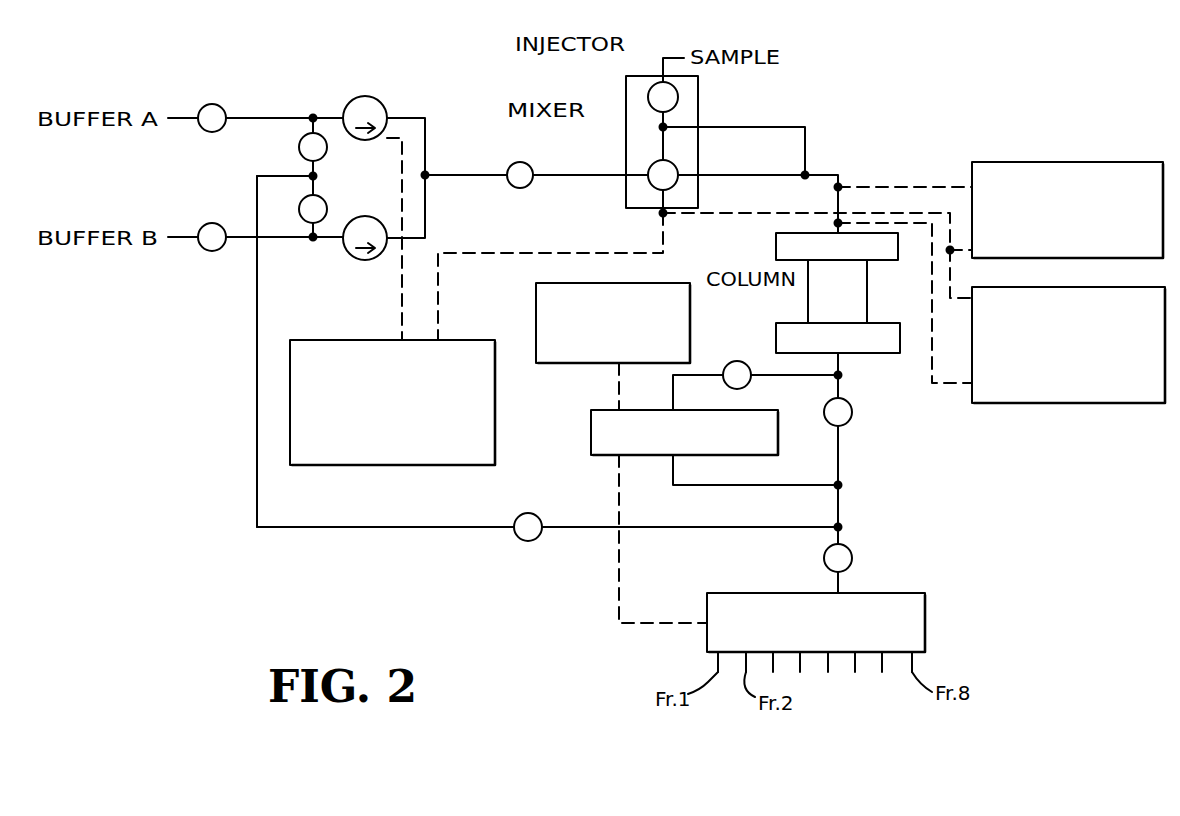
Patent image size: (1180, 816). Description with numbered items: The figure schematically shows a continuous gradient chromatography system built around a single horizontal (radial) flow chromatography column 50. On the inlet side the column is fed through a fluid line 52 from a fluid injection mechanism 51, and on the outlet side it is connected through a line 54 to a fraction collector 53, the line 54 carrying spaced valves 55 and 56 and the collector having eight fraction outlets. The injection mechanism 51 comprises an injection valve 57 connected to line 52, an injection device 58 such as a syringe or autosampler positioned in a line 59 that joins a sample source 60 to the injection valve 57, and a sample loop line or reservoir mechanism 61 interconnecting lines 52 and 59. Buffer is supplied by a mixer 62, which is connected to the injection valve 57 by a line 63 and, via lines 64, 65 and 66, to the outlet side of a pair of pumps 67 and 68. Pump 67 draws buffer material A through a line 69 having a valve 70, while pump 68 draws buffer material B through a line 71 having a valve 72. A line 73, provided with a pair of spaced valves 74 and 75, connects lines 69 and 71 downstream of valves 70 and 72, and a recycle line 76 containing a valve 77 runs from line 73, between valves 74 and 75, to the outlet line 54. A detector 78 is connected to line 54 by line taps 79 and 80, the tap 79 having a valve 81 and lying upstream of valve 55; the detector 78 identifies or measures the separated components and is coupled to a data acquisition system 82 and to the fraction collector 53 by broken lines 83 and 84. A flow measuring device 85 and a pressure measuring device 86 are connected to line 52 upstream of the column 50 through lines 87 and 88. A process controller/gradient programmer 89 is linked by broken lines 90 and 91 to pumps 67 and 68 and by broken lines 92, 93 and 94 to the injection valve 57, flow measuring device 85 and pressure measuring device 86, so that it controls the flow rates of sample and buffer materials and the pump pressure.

The horizontal chromatography column 50 is at (808, 290).
The fluid injection mechanism 51 is at (626, 100).
The fluid line 52 is at (838, 172).
The fraction collector 53 is at (927, 616).
The line 54 is at (840, 450).
The valve 55 is at (852, 416).
The valve 56 is at (852, 556).
The injection valve 57 is at (650, 184).
The injection device 58 is at (650, 90).
The line 59 is at (645, 130).
The sample source 60 is at (672, 57).
The sample loop line or reservoir mechanism 61 is at (745, 126).
The mixer 62 is at (545, 137).
The line 63 is at (556, 178).
The line 64 is at (485, 178).
The line 65 is at (428, 142).
The line 66 is at (428, 222).
The pump 67 is at (380, 100).
The pump 68 is at (352, 256).
The line 69 is at (266, 117).
The valve 70 is at (212, 104).
The line 71 is at (298, 240).
The valve 72 is at (222, 205).
The line 73 is at (318, 176).
The valve 74 is at (299, 147).
The valve 75 is at (327, 209).
The recycle line 76 is at (257, 414).
The valve 77 is at (520, 542).
The detector 78 is at (591, 448).
The line tap 79 is at (816, 378).
The line tap 80 is at (776, 487).
The valve 81 is at (740, 360).
The data acquisition system 82 is at (550, 364).
The broken line 83 is at (616, 366).
The broken line 84 is at (622, 586).
The flow measuring device 85 is at (1115, 161).
The pressure measuring device 86 is at (1105, 404).
The line 87 is at (890, 186).
The line 88 is at (928, 362).
The process controller/gradient programmer 89 is at (380, 466).
The broken line 90 is at (402, 284).
The broken line 91 is at (428, 170).
The broken line 92 is at (490, 254).
The broken line 93 is at (748, 214).
The broken line 94 is at (956, 296).